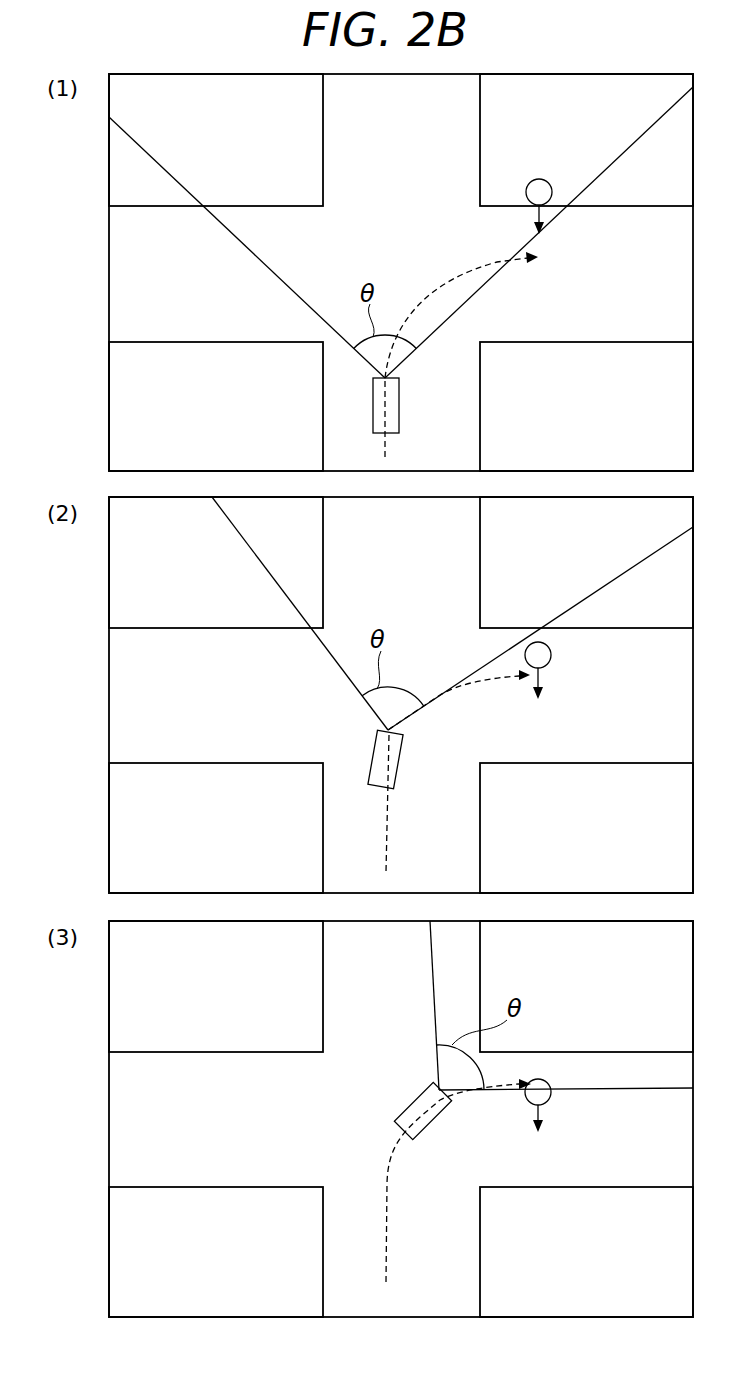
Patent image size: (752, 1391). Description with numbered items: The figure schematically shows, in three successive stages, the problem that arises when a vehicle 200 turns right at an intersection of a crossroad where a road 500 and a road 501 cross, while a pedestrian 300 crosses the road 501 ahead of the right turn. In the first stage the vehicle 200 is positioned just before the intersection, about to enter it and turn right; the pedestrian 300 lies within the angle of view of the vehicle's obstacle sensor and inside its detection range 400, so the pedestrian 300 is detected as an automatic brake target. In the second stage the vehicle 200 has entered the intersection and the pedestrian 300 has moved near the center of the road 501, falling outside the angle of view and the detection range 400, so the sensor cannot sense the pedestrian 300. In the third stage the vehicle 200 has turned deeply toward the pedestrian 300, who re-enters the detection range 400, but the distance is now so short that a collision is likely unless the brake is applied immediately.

The vehicle 200 is at (373, 413).
The pedestrian 300 is at (540, 179).
The detection range 400 is at (262, 263).
The road 500 is at (442, 405).
The road 501 is at (645, 250).